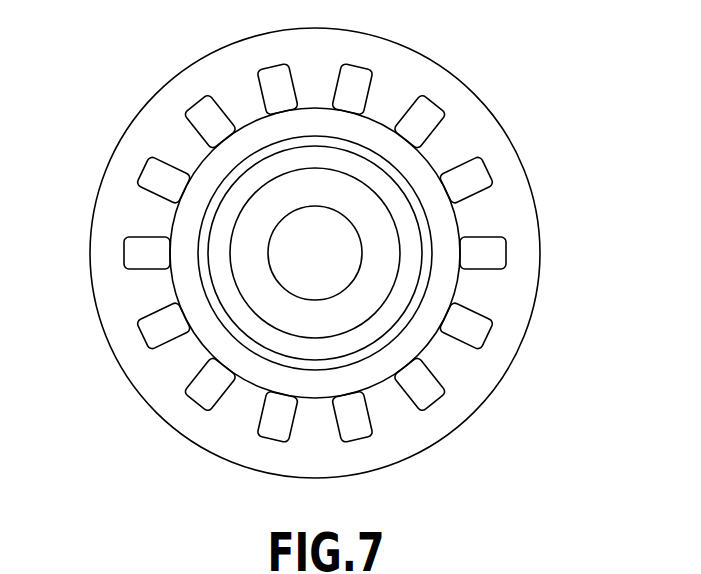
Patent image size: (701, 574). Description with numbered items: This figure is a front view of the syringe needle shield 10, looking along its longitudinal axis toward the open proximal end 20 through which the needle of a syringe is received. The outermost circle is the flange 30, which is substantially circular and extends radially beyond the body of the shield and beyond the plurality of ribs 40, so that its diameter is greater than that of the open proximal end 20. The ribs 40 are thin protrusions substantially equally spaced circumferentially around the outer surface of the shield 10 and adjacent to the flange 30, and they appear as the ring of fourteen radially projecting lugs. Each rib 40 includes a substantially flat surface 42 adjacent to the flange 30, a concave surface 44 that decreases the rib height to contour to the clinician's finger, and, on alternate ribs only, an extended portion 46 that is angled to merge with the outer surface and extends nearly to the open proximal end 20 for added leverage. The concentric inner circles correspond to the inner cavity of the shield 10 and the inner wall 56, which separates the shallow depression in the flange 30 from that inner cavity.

The syringe needle shield 10 is at (575, 93).
The open proximal end 20 is at (447, 283).
The flange 30 is at (93, 215).
The plurality of ribs 40 is at (507, 252).
The substantially flat surface 42 is at (315, 232).
The concave surface 44 is at (275, 78).
The extended portion 46 is at (315, 253).
The inner wall 56 is at (363, 292).